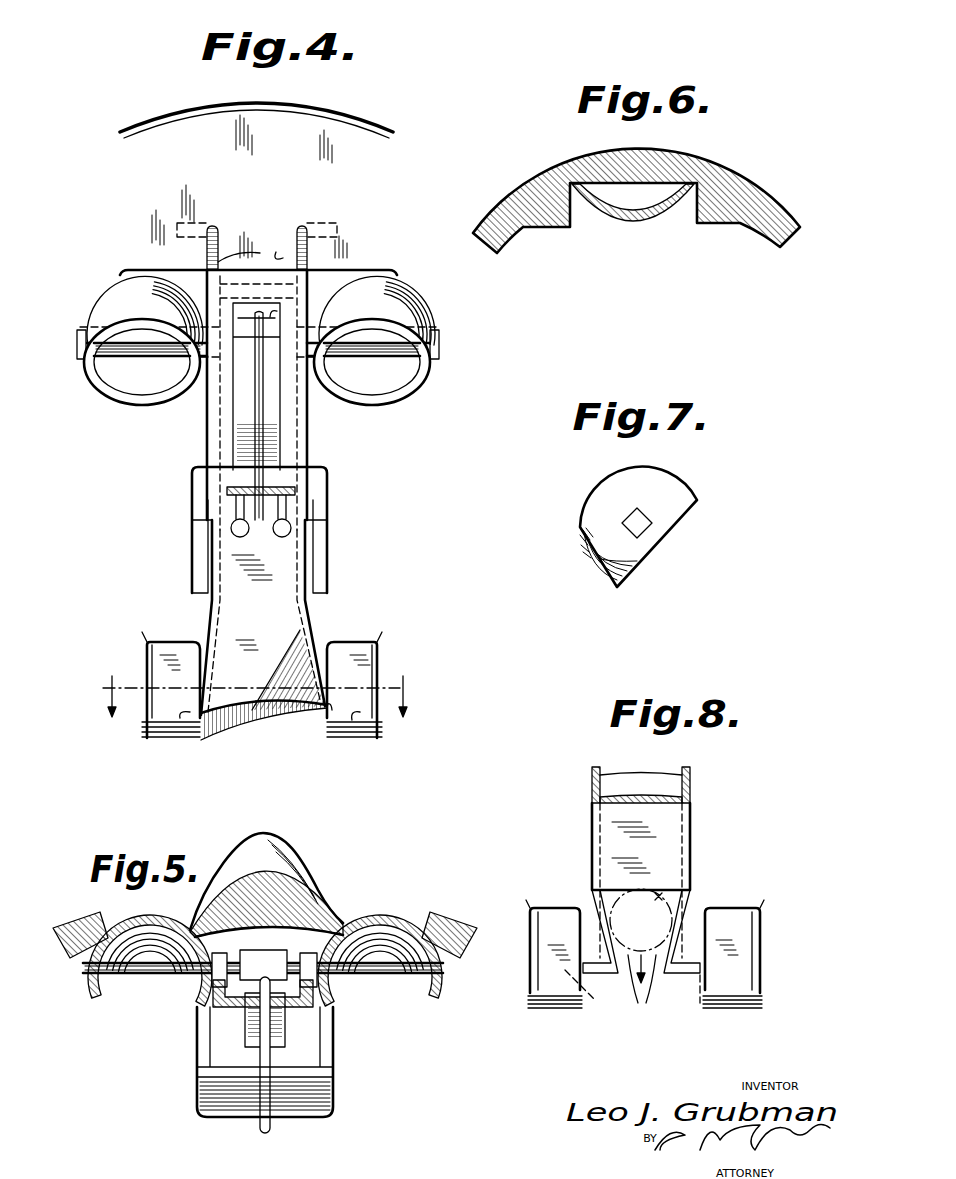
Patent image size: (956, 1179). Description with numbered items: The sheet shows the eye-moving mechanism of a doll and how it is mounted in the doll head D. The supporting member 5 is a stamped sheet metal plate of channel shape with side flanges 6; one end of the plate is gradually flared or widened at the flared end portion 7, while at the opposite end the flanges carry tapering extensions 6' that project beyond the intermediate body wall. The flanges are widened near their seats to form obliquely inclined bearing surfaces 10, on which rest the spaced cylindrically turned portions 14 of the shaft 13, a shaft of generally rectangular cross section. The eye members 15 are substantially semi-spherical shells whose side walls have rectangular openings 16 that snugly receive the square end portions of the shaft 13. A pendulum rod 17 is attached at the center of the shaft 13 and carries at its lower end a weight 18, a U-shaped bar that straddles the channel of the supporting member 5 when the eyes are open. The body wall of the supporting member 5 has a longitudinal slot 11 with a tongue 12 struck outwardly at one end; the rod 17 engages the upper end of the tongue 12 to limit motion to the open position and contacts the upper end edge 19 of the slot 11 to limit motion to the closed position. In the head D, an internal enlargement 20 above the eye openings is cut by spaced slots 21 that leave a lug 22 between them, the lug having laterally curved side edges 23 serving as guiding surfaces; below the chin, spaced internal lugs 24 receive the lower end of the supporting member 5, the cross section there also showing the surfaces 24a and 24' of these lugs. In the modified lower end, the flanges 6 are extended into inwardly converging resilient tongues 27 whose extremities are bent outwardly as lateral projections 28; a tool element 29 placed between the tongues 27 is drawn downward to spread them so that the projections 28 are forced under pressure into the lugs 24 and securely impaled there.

In FIG. 4, the supporting member 5 is at (293, 388).
In FIG. 8, the supporting member 5 is at (653, 853).
In FIG. 5, the supporting member 5 is at (293, 1007).
In FIG. 4, the side flanges 6 is at (261, 692).
In FIG. 8, the side flanges 6 is at (670, 778).
In FIG. 5, the side flanges 6 is at (263, 979).
In FIG. 4, the tapering extensions 6' is at (275, 227).
In FIG. 4, the flared end portion 7 is at (286, 630).
In FIG. 6, the flared end portion 7 is at (664, 213).
In FIG. 5, the bearing surfaces 10 is at (303, 953).
In FIG. 4, the slot 11 is at (277, 403).
In FIG. 5, the slot 11 is at (240, 1010).
In FIG. 4, the tongue 12 is at (247, 440).
In FIG. 5, the tongue 12 is at (250, 1027).
In FIG. 4, the shaft 13 is at (440, 331).
In FIG. 5, the shaft 13 is at (297, 957).
In FIG. 4, the cylindrically turned portions 14 is at (290, 350).
In FIG. 4, the eye members 15 is at (113, 307).
In FIG. 7, the eye members 15 is at (673, 473).
In FIG. 5, the eye members 15 is at (393, 910).
In FIG. 7, the rectangular openings 16 is at (643, 533).
In FIG. 4, the pendulum rod 17 is at (260, 440).
In FIG. 5, the pendulum rod 17 is at (267, 1060).
In FIG. 4, the weight 18 is at (320, 490).
In FIG. 5, the weight 18 is at (313, 1097).
In FIG. 4, the upper end edge of the slot 19 is at (274, 313).
In FIG. 4, the internal enlargement 20 is at (234, 203).
In FIG. 4, the slots 21 is at (219, 262).
In FIG. 4, the lug 22 is at (283, 257).
In FIG. 4, the laterally curved side edges 23 is at (207, 222).
In FIG. 4, the internal lugs 24 is at (286, 705).
In FIG. 8, the internal lugs 24 is at (666, 972).
In FIG. 4, the clamp curved face 24a is at (373, 657).
In FIG. 6, the clamp curved face 24a is at (700, 193).
In FIG. 4, the clamp inner face 24' is at (384, 773).
In FIG. 6, the clamp inner face 24' is at (560, 245).
In FIG. 8, the resilient tongues 27 is at (647, 993).
In FIG. 8, the lateral projections 28 is at (688, 978).
In FIG. 8, the tool element 29 is at (690, 882).
In FIG. 6, the doll head D is at (546, 175).
In FIG. 5, the doll head D is at (287, 907).